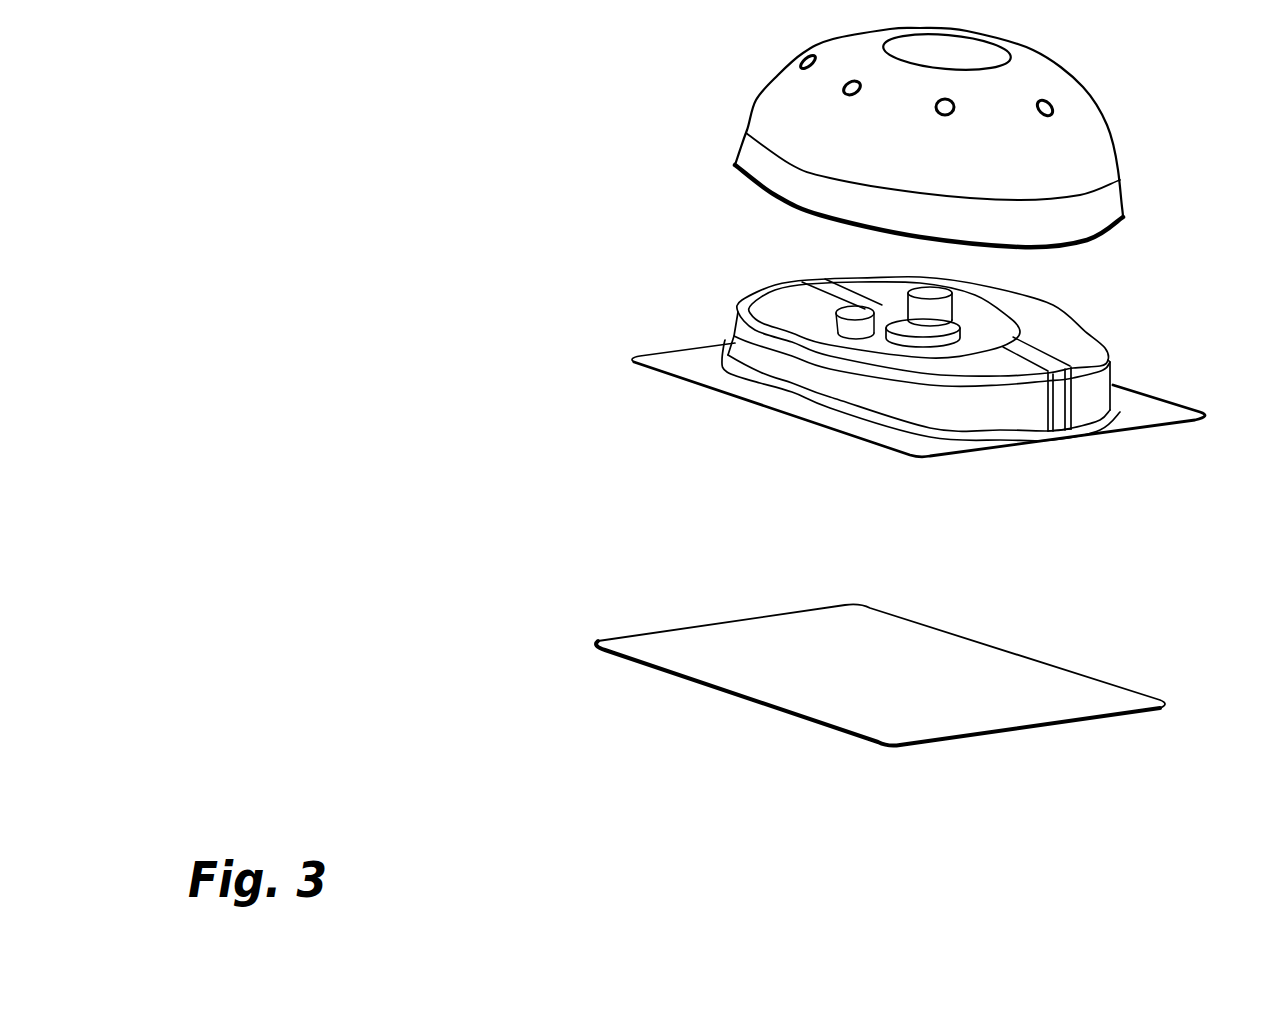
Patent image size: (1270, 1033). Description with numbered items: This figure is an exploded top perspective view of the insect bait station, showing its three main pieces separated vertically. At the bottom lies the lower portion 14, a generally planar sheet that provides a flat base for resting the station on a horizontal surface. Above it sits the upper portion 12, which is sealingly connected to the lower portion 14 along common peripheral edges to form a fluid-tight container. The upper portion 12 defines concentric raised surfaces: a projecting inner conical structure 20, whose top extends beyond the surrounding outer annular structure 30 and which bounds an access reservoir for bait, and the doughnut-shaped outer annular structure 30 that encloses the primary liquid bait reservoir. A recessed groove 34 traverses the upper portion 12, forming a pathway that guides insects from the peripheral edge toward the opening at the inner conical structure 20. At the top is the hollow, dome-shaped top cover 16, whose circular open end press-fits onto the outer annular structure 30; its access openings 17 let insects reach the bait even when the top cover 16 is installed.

The upper portion 12 is at (670, 363).
The lower portion 14 is at (623, 650).
The top cover 16 is at (776, 119).
The access openings 17 is at (1052, 110).
The inner conical structure 20 is at (957, 303).
The outer annular structure 30 is at (1080, 340).
The recessed groove 34 is at (1067, 407).